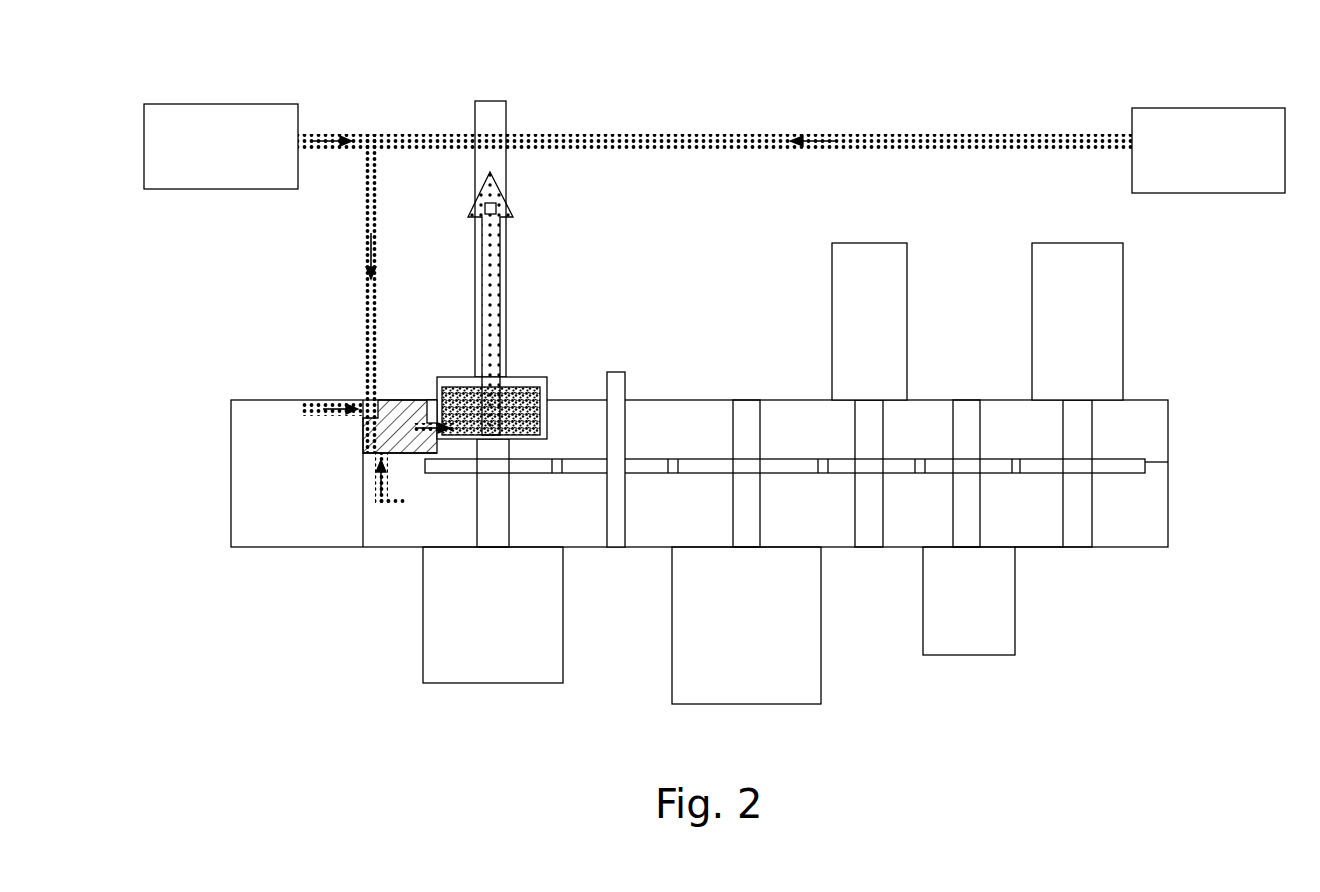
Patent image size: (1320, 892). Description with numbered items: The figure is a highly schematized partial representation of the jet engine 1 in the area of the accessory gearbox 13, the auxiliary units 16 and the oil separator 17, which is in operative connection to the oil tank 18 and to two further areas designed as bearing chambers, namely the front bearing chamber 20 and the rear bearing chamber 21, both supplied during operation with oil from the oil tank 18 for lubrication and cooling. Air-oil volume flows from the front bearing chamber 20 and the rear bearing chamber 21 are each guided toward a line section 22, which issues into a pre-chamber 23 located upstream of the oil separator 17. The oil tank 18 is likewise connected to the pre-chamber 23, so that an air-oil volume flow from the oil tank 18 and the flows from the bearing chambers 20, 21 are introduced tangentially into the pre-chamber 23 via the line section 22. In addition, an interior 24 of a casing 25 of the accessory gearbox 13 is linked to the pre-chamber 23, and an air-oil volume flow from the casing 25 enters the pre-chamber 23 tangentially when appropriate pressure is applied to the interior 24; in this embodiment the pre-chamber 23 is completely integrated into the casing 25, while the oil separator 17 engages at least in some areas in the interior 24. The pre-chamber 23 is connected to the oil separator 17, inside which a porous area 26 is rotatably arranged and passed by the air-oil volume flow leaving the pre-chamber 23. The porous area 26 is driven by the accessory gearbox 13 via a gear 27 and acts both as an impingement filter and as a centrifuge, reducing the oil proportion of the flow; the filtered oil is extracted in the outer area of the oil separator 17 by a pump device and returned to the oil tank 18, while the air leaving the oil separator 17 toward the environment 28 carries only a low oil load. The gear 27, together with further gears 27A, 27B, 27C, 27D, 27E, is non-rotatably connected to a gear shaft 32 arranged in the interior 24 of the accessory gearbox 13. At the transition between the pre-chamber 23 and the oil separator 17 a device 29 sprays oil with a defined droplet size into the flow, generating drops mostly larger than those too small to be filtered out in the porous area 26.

The jet engine 1 is at (122, 198).
The accessory gearbox 13 is at (1053, 560).
The auxiliary units 16 is at (958, 656).
The oil separator 17 is at (538, 362).
The oil tank 18 is at (251, 510).
The front bearing chamber 20 is at (233, 118).
The rear bearing chamber 21 is at (1200, 135).
The line section 22 is at (366, 212).
The pre-chamber 23 is at (403, 400).
The interior 24 is at (1153, 433).
The casing 25 is at (1169, 462).
The porous area 26 is at (545, 413).
The gear 27 is at (483, 511).
The further gear 27A is at (613, 543).
The further gear 27B is at (740, 538).
The further gear 27C is at (867, 540).
The further gear 27D is at (955, 540).
The further gear 27E is at (1075, 548).
The environment 28 is at (508, 70).
The device 29 is at (432, 410).
The gear shaft 32 is at (703, 462).